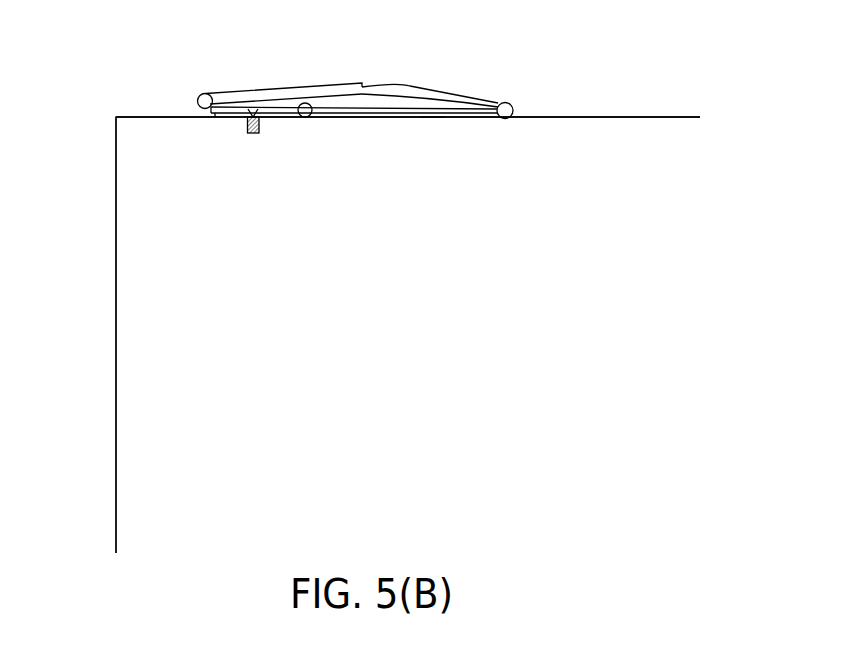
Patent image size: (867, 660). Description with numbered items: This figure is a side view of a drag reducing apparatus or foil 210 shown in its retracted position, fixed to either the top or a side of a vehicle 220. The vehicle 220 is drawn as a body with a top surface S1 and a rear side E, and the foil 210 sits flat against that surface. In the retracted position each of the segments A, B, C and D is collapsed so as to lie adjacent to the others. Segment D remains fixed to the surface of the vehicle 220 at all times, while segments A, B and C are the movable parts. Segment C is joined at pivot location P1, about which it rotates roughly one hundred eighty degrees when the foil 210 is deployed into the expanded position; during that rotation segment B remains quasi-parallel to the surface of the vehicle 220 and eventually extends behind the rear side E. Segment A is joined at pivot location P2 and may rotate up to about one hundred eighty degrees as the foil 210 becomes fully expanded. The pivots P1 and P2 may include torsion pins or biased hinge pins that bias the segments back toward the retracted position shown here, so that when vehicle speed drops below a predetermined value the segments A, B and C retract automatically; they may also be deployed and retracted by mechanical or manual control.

The vehicle 220 is at (142, 116).
The upper surface S1 is at (573, 117).
The rear side of the vehicle E is at (119, 267).
The segment C is at (432, 121).
The foil 210 is at (348, 75).
The segment A is at (252, 88).
The segment B is at (457, 93).
The pivot location P2 is at (204, 109).
The pivot location P1 is at (311, 118).
The segment D is at (279, 121).